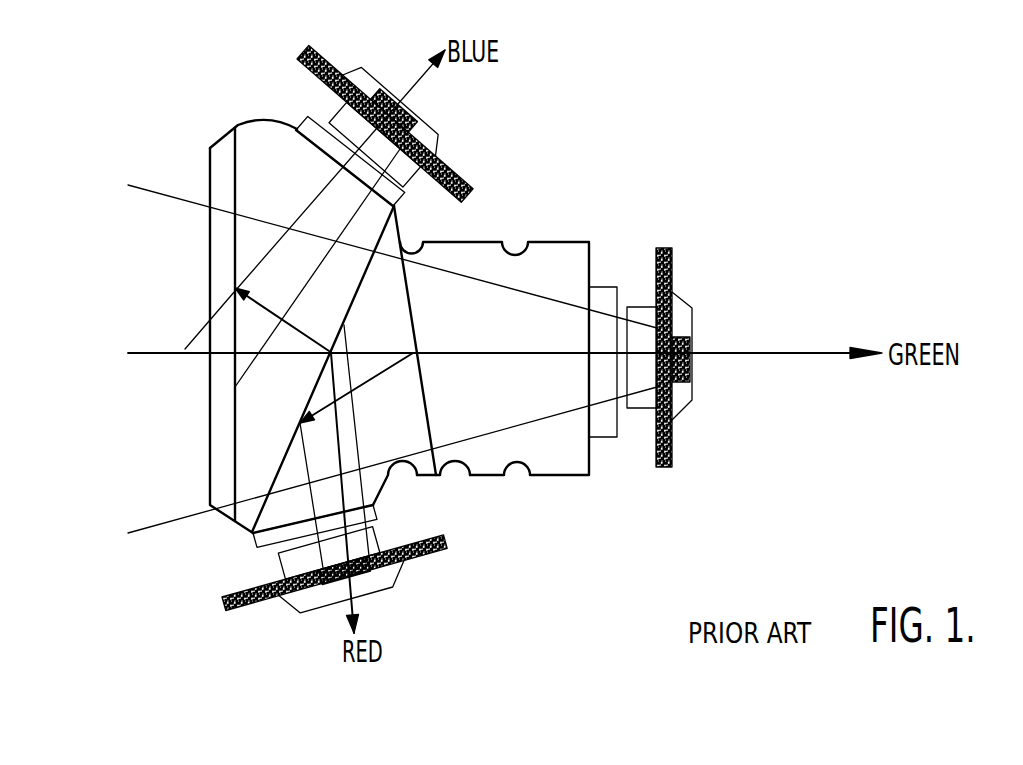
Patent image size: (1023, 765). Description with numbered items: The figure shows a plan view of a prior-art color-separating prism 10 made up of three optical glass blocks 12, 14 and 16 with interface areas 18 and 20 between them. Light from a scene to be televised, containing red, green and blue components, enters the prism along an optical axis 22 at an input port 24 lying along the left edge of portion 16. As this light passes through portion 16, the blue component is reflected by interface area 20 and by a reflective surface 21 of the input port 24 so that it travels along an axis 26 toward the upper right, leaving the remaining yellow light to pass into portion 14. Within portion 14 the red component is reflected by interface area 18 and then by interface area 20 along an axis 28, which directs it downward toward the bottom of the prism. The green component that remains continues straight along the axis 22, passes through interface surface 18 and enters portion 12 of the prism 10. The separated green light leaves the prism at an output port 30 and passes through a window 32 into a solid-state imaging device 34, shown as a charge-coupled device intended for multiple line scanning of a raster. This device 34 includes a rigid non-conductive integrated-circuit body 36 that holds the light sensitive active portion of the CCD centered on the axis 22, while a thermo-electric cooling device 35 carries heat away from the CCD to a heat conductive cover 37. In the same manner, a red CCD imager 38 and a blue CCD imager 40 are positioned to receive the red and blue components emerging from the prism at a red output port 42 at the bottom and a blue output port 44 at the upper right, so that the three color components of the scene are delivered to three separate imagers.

The prism 10 is at (563, 183).
The optical glass block 12 is at (481, 242).
The optical glass block 14 is at (396, 476).
The optical glass block 16 is at (255, 122).
The interface area 18 is at (464, 476).
The interface area 20 is at (293, 434).
The reflective surface 21 is at (236, 214).
The optical axis 22 is at (172, 357).
The input port 24 is at (210, 235).
The axis 26 is at (278, 245).
The axis 28 is at (355, 391).
The output port 30 is at (600, 287).
The window 32 is at (641, 410).
The solid-state imaging device 34 is at (703, 369).
The thermo-electric cooling device 35 is at (692, 374).
The integrated-circuit body 36 is at (670, 273).
The heat conductive cover 37 is at (692, 318).
The red CCD imager 38 is at (436, 566).
The blue CCD imager 40 is at (446, 119).
The red prism output port 42 is at (376, 505).
The blue prism output port 44 is at (398, 196).